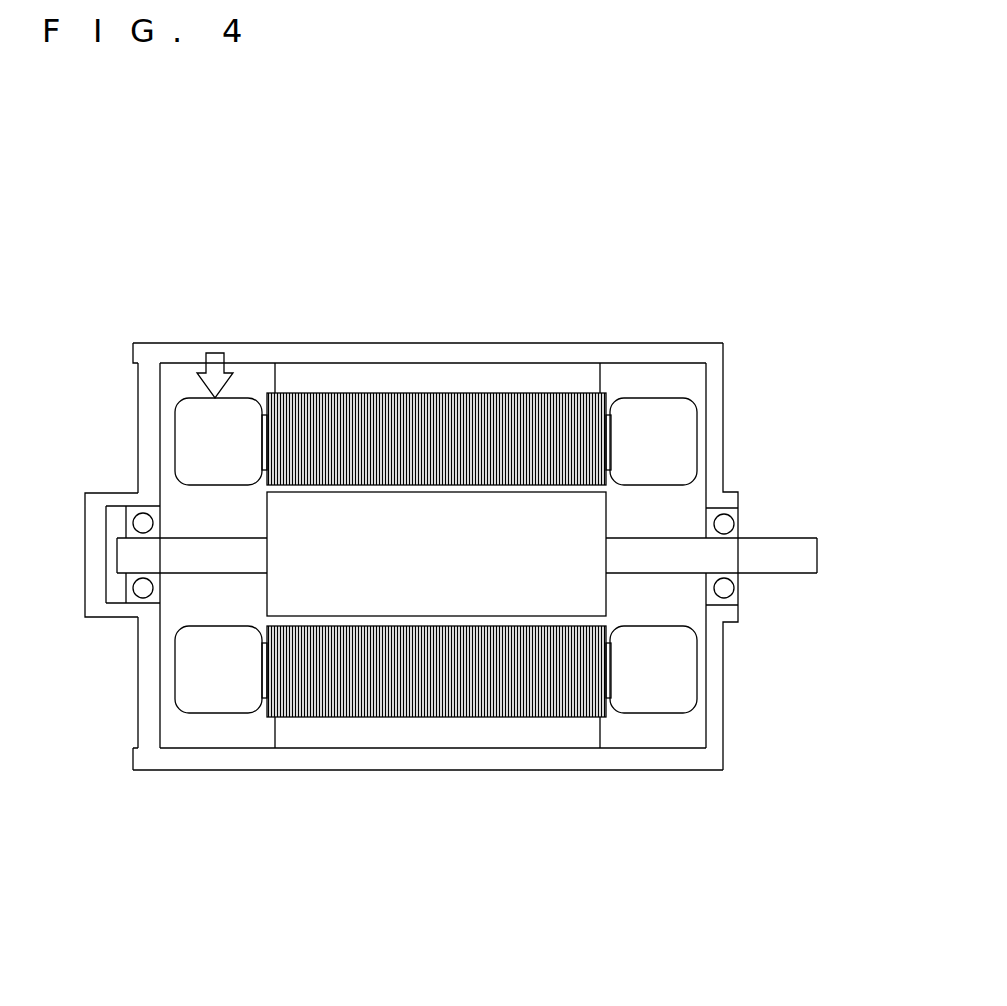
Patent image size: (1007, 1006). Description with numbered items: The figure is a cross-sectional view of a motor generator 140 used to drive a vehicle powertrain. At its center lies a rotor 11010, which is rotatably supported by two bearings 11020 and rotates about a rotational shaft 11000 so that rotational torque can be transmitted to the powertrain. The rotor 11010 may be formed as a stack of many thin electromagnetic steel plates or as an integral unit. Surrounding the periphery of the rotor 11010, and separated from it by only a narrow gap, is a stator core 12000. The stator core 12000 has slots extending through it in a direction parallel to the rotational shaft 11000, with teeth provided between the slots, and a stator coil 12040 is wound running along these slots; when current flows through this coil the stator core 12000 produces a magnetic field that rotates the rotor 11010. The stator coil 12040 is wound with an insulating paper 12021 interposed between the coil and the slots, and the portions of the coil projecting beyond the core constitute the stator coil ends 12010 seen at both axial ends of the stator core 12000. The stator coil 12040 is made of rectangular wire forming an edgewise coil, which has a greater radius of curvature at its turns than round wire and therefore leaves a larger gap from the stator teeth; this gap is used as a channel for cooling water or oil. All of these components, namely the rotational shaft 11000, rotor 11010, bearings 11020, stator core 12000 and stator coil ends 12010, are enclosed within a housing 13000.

The motor generator 140 is at (523, 178).
The housing 13000 is at (348, 353).
The stator core 12000 is at (443, 392).
The stator coil ends 12010 is at (187, 412).
The insulating paper 12021 is at (262, 432).
The rotor 11010 is at (290, 533).
The rotational shaft 11000 is at (768, 548).
The bearings 11020 is at (133, 600).
The stator coil 12040 is at (737, 676).